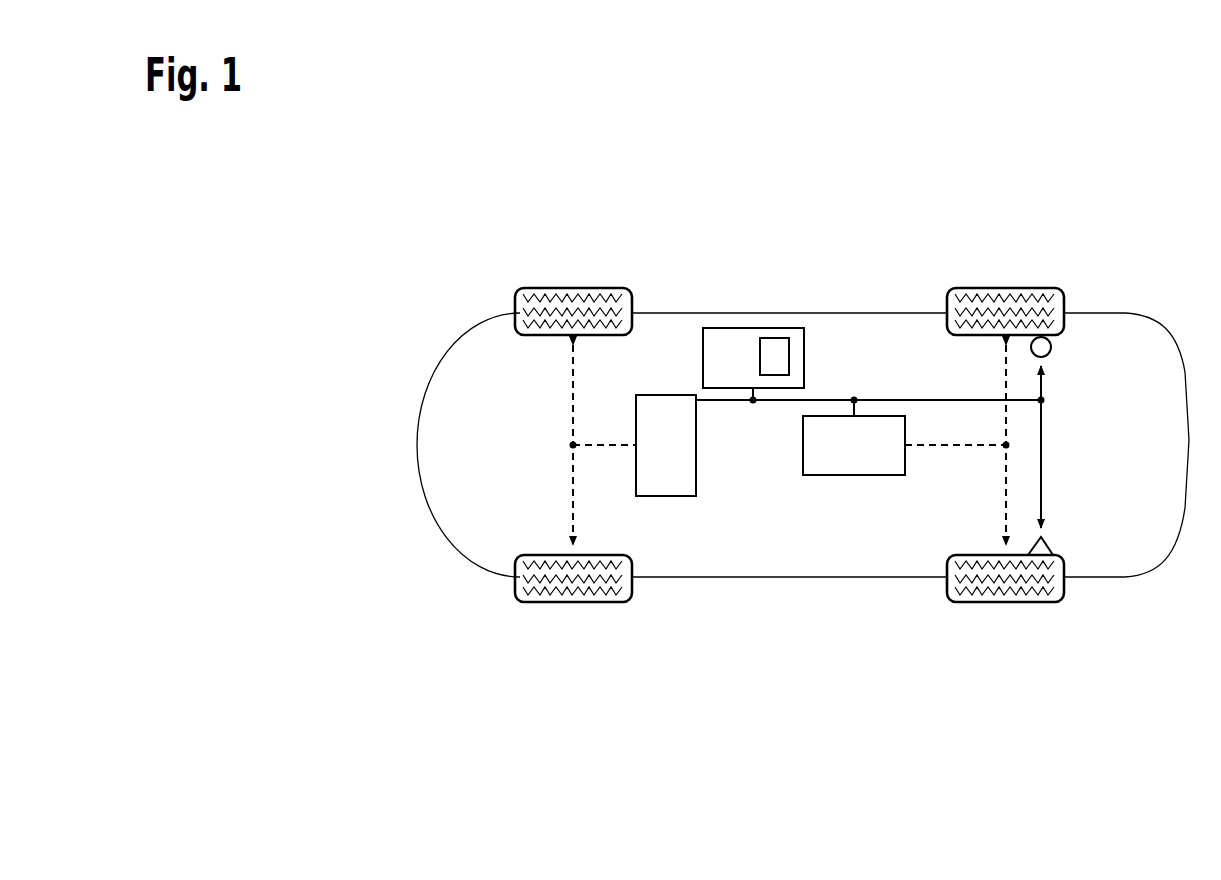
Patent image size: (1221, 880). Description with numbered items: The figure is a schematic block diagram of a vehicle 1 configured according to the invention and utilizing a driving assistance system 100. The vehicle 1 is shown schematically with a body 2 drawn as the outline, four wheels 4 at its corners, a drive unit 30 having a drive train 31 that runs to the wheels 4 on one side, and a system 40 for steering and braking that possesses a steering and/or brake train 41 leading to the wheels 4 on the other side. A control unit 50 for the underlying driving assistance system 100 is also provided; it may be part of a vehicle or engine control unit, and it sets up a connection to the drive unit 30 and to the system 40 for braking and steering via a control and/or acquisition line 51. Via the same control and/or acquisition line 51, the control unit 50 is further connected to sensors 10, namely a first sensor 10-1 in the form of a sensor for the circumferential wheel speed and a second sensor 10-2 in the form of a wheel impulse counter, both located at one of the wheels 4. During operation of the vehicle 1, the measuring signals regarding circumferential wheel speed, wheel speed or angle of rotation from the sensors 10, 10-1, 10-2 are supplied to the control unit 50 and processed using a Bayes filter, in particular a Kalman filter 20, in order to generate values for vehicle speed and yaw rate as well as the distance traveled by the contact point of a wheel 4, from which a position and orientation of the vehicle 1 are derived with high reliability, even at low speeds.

The vehicle 1 is at (365, 212).
The body 2 is at (877, 313).
The wheels 4 is at (560, 312).
The sensors 10 is at (1095, 446).
The first sensor 10-1 is at (1050, 353).
The second sensor 10-2 is at (1046, 536).
The Kalman filter 20 is at (782, 355).
The drive unit 30 is at (665, 496).
The drive train 31 is at (572, 392).
The system for steering and braking 40 is at (858, 475).
The steering and/or brake train 41 is at (1004, 497).
The control unit 50 is at (722, 350).
The control and/or acquisition line 51 is at (876, 398).
The driving assistance system 100 is at (663, 384).